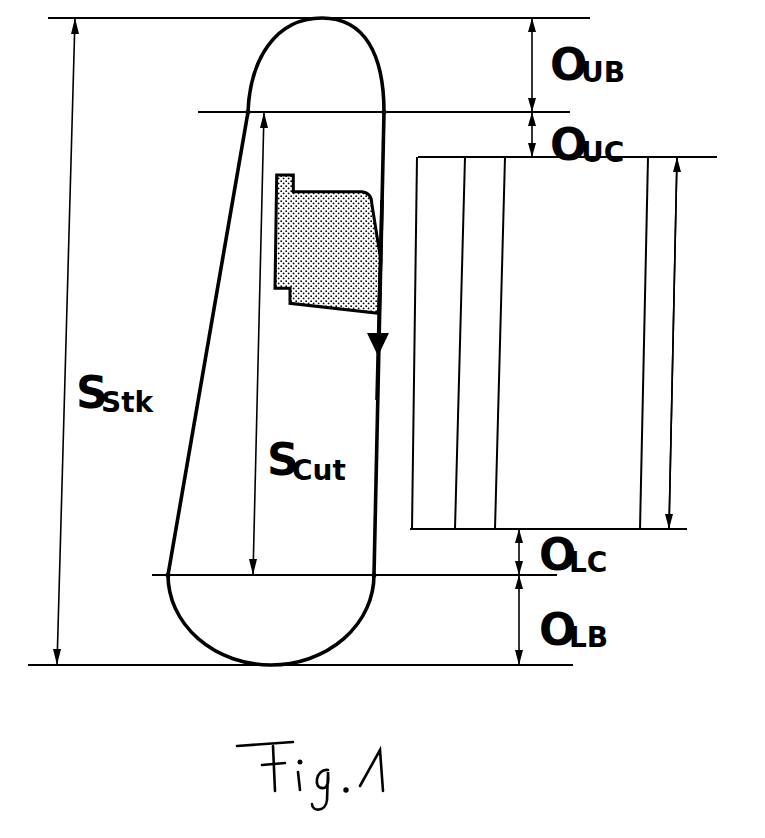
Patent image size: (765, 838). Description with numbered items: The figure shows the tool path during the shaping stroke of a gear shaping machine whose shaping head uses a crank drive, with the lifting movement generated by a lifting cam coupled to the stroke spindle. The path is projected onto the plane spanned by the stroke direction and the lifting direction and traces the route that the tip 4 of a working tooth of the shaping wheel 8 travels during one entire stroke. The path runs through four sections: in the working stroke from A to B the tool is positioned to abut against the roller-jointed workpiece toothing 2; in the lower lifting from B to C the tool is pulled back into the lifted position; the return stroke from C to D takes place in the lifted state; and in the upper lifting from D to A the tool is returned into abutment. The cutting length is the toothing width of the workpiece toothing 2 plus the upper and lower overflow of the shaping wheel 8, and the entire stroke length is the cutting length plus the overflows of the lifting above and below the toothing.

The tip of a working tooth 4 is at (365, 321).
The shaping wheel 8 is at (312, 175).
The workpiece toothing 2 is at (699, 343).
The tool path point A is at (410, 87).
The tool path point B is at (394, 602).
The tool path point C is at (151, 602).
The tool path point D is at (231, 87).